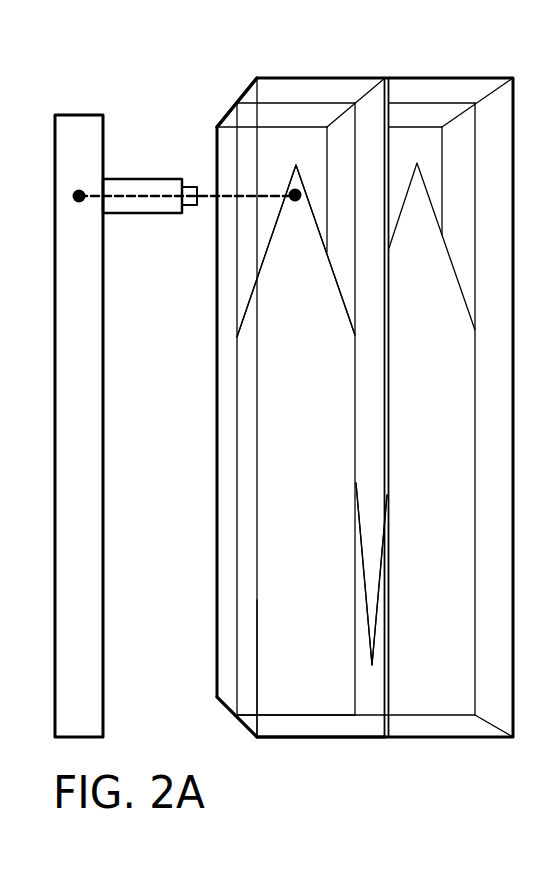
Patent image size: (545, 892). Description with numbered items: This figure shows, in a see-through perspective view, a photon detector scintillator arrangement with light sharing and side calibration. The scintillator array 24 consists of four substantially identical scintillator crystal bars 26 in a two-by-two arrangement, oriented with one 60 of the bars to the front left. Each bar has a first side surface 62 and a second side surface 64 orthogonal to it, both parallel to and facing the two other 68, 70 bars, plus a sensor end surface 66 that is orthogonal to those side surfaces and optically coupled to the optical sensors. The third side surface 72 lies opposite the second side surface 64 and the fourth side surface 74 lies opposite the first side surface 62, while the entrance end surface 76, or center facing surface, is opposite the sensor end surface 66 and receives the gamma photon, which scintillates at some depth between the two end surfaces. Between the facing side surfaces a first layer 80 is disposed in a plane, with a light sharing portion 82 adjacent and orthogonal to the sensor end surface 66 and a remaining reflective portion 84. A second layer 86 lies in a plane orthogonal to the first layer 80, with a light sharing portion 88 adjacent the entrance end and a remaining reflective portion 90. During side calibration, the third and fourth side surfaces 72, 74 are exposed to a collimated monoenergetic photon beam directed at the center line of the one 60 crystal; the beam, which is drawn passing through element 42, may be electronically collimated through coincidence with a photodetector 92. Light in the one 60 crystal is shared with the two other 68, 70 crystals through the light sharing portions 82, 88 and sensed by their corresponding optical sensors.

The scintillator array 24 is at (173, 140).
The scintillator crystal bar 26 is at (257, 78).
The lens 42 is at (153, 178).
The one scintillator crystal bar 60 is at (312, 77).
The first side surface 62 is at (370, 707).
The second side surface 64 is at (305, 678).
The sensor end surface 66 is at (318, 723).
The other scintillator crystal bar 68 is at (223, 98).
The other scintillator crystal bar 70 is at (448, 77).
The third side surface 72 is at (338, 697).
The fourth side surface 74 is at (250, 687).
The entrance end surface 76 is at (313, 92).
The first layer 80 is at (385, 739).
The light sharing portion 82 is at (368, 680).
The reflective portion 84 is at (363, 567).
The second layer 86 is at (233, 342).
The light sharing portion 88 is at (272, 212).
The reflective portion 90 is at (307, 353).
The photodetector 92 is at (72, 113).